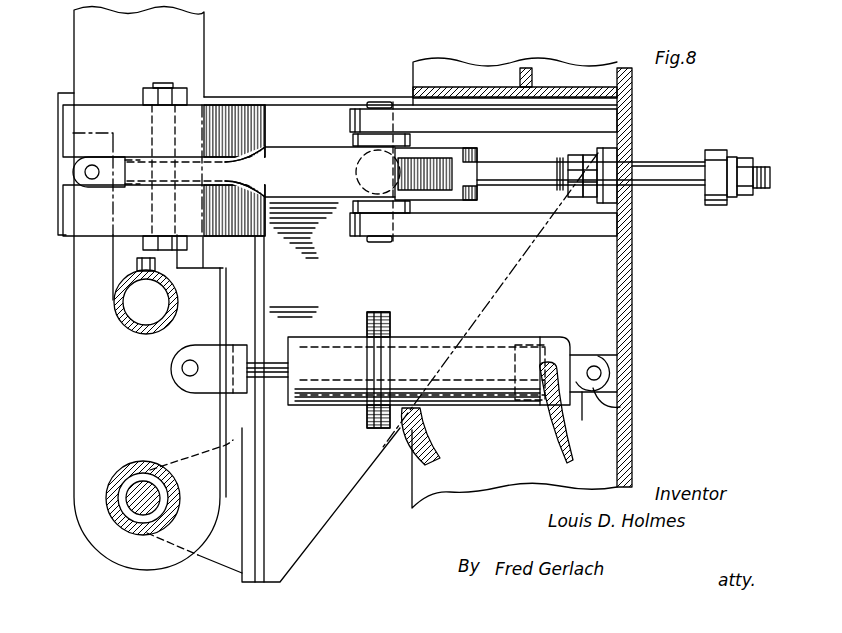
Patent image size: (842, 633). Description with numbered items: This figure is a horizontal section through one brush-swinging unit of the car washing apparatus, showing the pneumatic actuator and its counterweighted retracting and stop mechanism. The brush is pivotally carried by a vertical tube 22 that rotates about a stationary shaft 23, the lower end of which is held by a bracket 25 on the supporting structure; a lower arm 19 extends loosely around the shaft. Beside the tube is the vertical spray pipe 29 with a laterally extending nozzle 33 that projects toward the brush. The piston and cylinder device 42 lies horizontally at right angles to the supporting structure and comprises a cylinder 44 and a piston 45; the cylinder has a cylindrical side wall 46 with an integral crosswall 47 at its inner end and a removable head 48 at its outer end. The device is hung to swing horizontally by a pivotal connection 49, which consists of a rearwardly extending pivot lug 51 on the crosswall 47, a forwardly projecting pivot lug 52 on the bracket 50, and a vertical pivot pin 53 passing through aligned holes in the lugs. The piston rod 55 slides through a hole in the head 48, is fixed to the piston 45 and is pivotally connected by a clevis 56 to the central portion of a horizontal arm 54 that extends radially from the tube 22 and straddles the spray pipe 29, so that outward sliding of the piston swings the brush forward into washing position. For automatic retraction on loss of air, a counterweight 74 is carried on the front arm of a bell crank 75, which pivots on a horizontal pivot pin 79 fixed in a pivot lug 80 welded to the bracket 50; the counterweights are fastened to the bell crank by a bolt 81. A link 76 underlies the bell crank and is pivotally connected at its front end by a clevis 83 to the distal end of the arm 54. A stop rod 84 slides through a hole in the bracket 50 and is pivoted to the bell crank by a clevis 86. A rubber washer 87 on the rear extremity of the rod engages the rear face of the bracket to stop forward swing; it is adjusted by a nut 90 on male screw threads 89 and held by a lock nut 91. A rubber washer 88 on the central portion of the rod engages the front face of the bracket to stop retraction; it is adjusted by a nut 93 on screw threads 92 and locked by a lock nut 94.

The lower arms 19 is at (204, 27).
The tube 22 is at (132, 465).
The shaft 23 is at (150, 483).
The bracket 25 is at (213, 552).
The spray pipe 29 is at (128, 330).
The nozzle 33 is at (135, 267).
The piston and cylinder device 42 is at (498, 330).
The cylinder 44 is at (562, 337).
The piston 45 is at (527, 353).
The cylindrical side wall 46 is at (510, 402).
The crosswall 47 is at (570, 347).
The cylinder head 48 is at (347, 337).
The pivotal connection 49 is at (620, 407).
The bracket 50 is at (632, 442).
The pivot lug 51 is at (587, 394).
The pivot lug 52 is at (613, 382).
The pivot pin 53 is at (600, 372).
The arm 54 is at (88, 405).
The piston rod 55 is at (272, 363).
The clevis 56 is at (213, 347).
The counterweight 74 is at (230, 117).
The bell crank 75 is at (293, 172).
The link 76 is at (290, 147).
The pivot pin 79 is at (382, 104).
The pivot lug 80 is at (512, 130).
The bolt 81 is at (167, 98).
The clevis 83 is at (75, 175).
The stop rod 84 is at (660, 187).
The clevis 86 is at (463, 200).
The rubber washer 87 is at (707, 206).
The rubber washer 88 is at (612, 162).
The male screw threads 89 is at (762, 189).
The nut 90 is at (728, 197).
The lock nut 91 is at (740, 196).
The male screw threads 92 is at (570, 160).
The nut 93 is at (590, 195).
The lock nut 94 is at (573, 195).